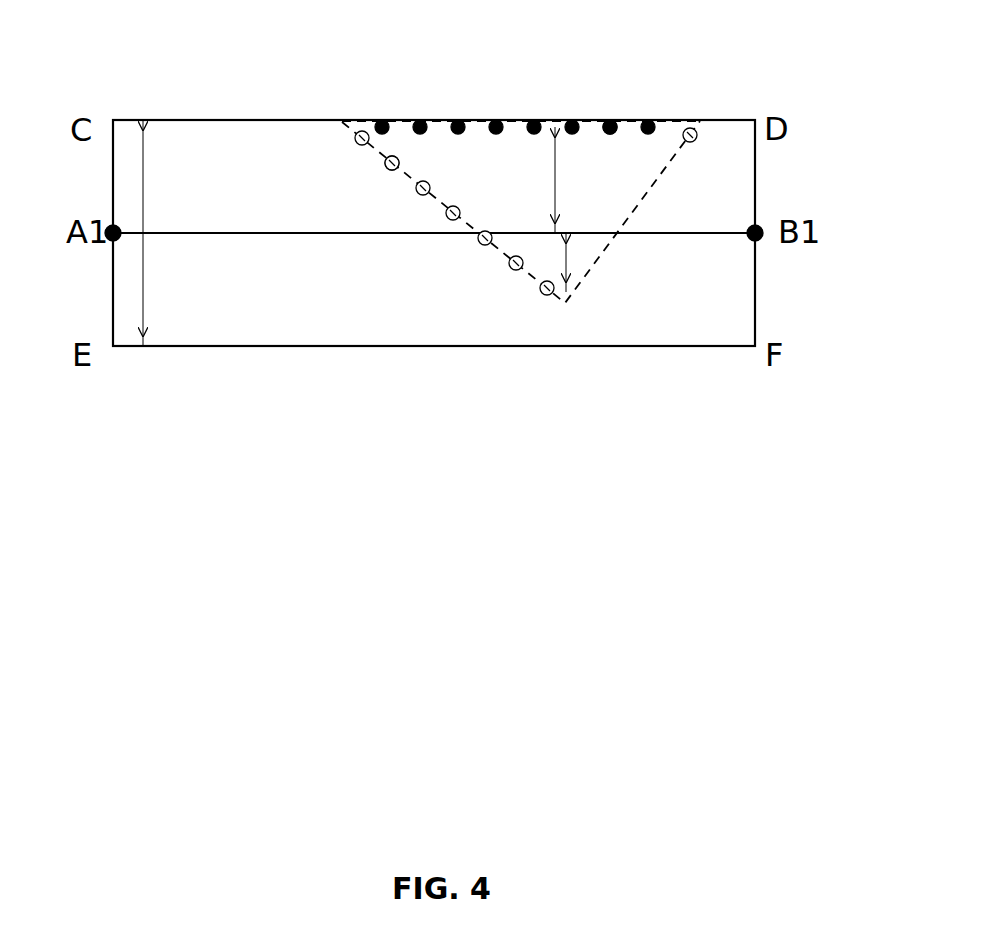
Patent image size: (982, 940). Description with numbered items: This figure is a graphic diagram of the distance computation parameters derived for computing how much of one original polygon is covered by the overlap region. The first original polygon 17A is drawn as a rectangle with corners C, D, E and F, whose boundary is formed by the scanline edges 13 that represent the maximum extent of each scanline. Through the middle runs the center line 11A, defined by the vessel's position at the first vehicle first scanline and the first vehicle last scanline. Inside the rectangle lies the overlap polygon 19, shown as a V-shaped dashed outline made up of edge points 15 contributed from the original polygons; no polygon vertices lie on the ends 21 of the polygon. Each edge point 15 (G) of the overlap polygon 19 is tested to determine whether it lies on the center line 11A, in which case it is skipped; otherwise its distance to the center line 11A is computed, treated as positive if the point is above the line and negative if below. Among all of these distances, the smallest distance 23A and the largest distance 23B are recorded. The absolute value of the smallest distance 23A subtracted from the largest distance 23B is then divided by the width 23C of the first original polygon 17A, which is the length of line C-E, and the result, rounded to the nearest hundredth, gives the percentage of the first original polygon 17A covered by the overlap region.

The first original polygon 17A is at (163, 108).
The scanline edges 13 is at (296, 118).
The center line 11A is at (237, 234).
The ends of each polygon 21 is at (655, 205).
The overlap polygon 19 is at (473, 114).
The edge points 15 is at (430, 183).
The smallest distance 23A is at (573, 258).
The largest distance 23B is at (556, 173).
The width of first original polygon 23C is at (165, 233).